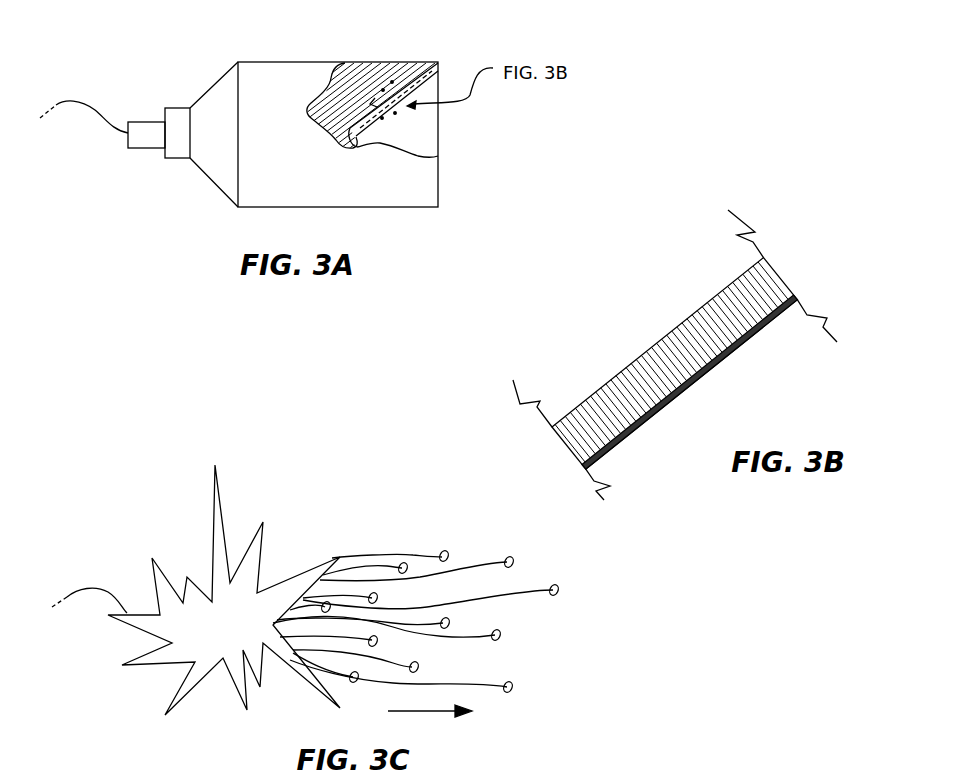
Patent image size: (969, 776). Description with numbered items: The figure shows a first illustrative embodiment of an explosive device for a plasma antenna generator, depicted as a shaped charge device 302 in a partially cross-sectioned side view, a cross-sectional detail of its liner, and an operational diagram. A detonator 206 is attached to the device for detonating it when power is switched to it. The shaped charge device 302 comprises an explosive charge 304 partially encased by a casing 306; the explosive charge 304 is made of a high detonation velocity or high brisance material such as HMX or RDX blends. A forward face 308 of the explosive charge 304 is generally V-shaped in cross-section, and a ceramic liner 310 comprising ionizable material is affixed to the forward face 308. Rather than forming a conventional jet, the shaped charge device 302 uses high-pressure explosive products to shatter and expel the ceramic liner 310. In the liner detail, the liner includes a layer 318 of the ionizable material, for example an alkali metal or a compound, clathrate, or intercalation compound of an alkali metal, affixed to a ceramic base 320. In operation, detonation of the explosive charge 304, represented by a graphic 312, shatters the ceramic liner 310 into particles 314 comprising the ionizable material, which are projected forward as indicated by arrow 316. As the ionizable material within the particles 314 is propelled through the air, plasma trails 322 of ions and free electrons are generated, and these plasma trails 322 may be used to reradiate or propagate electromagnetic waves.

In FIG. 3A, the detonator 206 is at (141, 128).
In FIG. 3A, the shaped charge device 302 is at (416, 230).
In FIG. 3A, the explosive charge 304 is at (362, 72).
In FIG. 3A, the casing 306 is at (422, 182).
In FIG. 3A, the forward face 308 is at (417, 63).
In FIG. 3A, the ceramic liner 310 is at (358, 135).
In FIG. 3B, the ceramic liner 310 is at (712, 289).
In FIG. 3C, the graphic 312 is at (262, 550).
In FIG. 3C, the particles 314 is at (512, 692).
In FIG. 3C, the arrow 316 is at (418, 713).
In FIG. 3B, the layer 318 is at (730, 357).
In FIG. 3B, the ceramic base 320 is at (682, 338).
In FIG. 3C, the plasma trails 322 is at (378, 556).